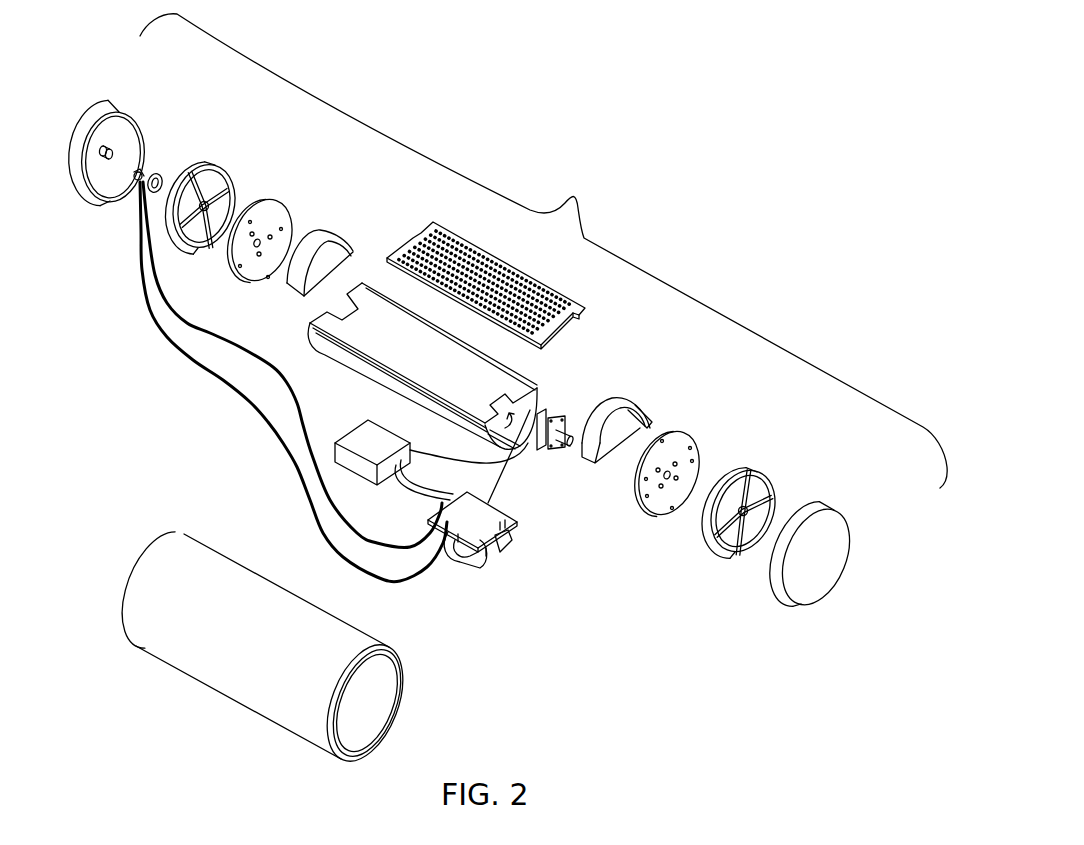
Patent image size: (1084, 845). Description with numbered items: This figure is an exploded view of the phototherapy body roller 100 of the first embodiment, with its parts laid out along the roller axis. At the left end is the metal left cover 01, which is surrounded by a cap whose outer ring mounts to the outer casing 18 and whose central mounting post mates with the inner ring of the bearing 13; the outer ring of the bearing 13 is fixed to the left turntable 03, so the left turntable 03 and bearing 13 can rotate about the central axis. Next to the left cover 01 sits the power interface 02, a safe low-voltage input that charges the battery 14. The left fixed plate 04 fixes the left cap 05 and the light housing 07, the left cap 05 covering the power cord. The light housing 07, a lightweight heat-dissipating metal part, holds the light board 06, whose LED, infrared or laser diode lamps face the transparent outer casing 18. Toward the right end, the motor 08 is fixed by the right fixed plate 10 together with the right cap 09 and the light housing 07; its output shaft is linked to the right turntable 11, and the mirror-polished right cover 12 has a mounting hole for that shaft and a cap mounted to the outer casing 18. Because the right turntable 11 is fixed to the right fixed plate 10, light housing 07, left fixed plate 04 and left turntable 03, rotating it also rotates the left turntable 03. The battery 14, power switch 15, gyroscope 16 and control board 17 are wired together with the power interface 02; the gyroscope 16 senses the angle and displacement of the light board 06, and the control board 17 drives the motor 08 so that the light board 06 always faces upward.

The phototherapy body roller 100 is at (663, 162).
The left cover 01 is at (145, 123).
The power interface 02 is at (138, 172).
The left turntable 03 is at (223, 187).
The left fixed plate 04 is at (277, 223).
The left cap 05 is at (333, 255).
The light board 06 is at (490, 264).
The light housing 07 is at (492, 377).
The motor 08 is at (560, 418).
The right cap 09 is at (640, 411).
The right fixed plate 10 is at (690, 458).
The right turntable 11 is at (768, 495).
The right cover 12 is at (823, 563).
The bearing 13 is at (168, 146).
The battery 14 is at (358, 467).
The power switch 15 is at (458, 563).
The gyroscope 16 is at (507, 552).
The control board 17 is at (492, 515).
The outer casing 18 is at (262, 683).